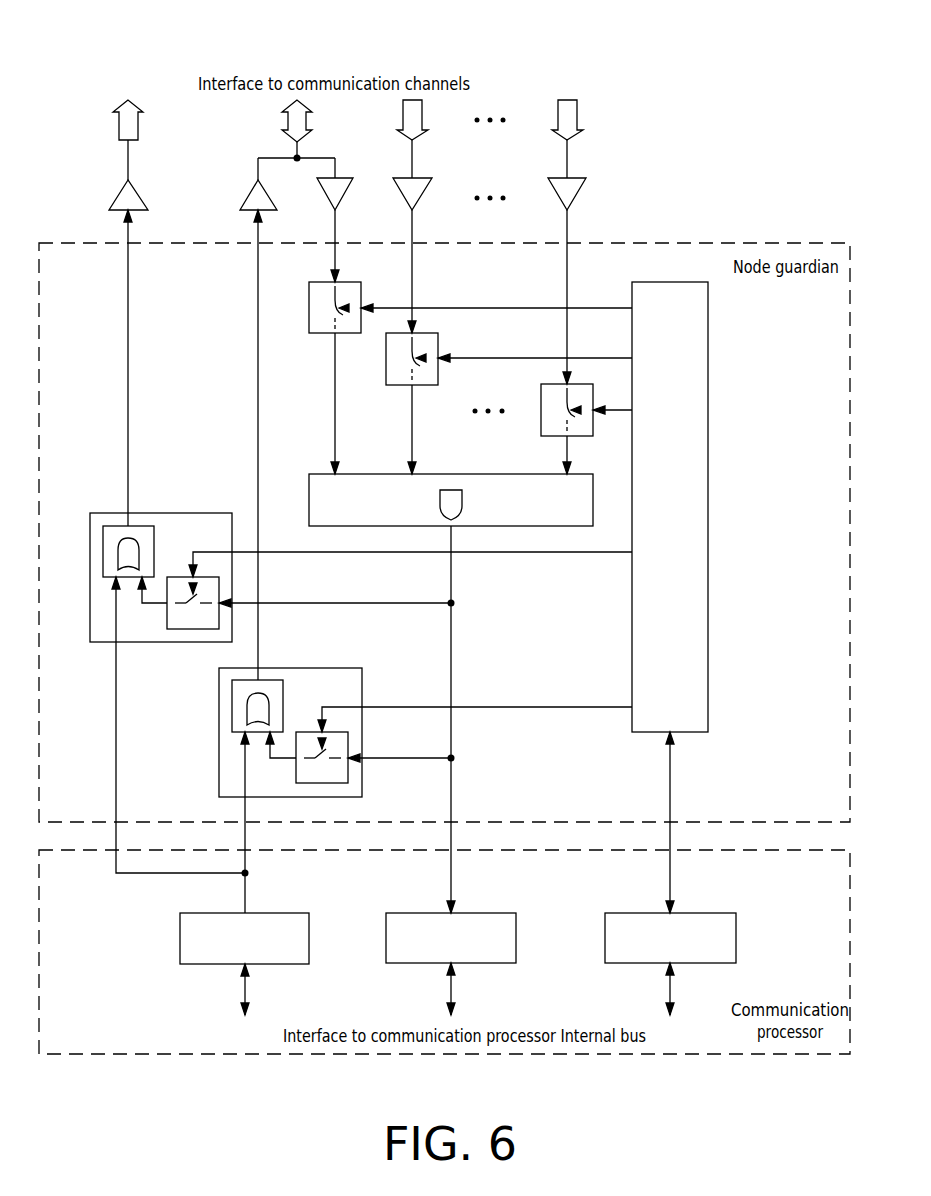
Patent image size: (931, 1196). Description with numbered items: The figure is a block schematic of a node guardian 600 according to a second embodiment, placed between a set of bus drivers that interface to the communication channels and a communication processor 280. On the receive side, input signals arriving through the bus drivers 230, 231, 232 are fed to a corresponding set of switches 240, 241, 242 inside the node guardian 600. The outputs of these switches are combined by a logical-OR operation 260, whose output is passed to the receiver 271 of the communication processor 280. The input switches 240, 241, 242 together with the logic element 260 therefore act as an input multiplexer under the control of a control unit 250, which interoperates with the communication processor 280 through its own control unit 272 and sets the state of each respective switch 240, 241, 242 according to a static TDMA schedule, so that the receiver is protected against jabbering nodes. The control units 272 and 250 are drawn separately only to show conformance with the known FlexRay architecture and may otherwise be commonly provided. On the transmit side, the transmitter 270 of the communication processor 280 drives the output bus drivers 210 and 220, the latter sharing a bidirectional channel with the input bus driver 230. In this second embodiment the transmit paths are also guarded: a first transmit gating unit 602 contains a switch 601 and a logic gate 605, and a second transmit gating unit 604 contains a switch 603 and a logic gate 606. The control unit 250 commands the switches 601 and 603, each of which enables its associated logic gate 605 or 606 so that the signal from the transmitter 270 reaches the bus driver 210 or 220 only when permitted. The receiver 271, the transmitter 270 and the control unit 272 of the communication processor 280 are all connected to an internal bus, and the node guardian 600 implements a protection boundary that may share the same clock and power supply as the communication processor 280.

The bus driver 210 is at (118, 198).
The bus driver 220 is at (247, 198).
The bus driver 230 is at (345, 190).
The bus driver 231 is at (425, 190).
The bus driver 232 is at (580, 190).
The switch 240 is at (307, 317).
The switch 241 is at (385, 366).
The switch 242 is at (541, 418).
The control unit 250 is at (709, 458).
The logical-OR operation 260 is at (309, 491).
The transmitter 270 is at (200, 966).
The receiver 271 is at (405, 966).
The control unit 272 is at (623, 966).
The communication processor 280 is at (116, 1055).
The node guardian 600 is at (78, 241).
The switch 601 is at (167, 617).
The transmit gating unit 602 is at (202, 513).
The switch 603 is at (296, 770).
The transmit gating unit 604 is at (337, 667).
The logic gate 605 is at (155, 555).
The logic gate 606 is at (284, 710).